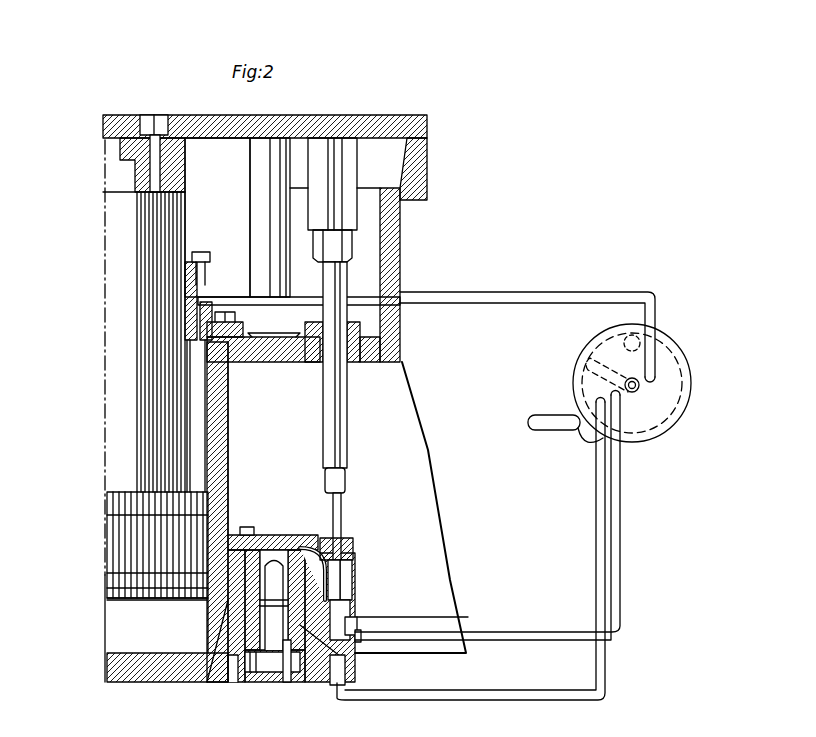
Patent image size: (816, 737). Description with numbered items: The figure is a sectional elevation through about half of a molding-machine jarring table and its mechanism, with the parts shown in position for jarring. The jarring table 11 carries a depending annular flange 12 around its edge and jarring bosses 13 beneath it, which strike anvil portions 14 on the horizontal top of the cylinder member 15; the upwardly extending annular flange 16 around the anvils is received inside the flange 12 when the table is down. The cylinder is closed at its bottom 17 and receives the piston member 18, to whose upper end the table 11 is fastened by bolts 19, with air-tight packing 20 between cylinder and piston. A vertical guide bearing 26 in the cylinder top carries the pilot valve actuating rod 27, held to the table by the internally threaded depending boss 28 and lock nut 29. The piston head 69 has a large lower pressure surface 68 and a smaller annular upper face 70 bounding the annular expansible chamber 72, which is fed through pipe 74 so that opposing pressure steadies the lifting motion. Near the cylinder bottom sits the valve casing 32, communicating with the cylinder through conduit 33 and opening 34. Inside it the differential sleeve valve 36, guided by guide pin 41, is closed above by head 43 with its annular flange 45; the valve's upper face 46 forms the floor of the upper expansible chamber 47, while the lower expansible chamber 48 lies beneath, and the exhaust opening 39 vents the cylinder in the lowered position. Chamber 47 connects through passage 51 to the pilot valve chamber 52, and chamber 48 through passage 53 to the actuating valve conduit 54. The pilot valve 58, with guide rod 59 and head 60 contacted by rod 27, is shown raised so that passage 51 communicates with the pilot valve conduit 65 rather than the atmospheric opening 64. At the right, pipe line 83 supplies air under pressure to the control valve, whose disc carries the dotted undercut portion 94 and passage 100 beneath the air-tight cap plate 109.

The jarring table 11 is at (388, 114).
The depending annular flange 12 is at (427, 134).
The jarring bosses 13 is at (250, 222).
The anvil portions 14 is at (280, 336).
The cylinder member 15 is at (228, 432).
The upwardly extending annular flange 16 is at (400, 275).
The cylinder bottom 17 is at (166, 683).
The piston member 18 is at (110, 432).
The bolts 19 is at (152, 172).
The air-tight packing 20 is at (185, 290).
The vertical guide bearing 26 is at (400, 333).
The pilot valve actuating rod 27 is at (347, 430).
The internally screw-threaded depending boss 28 is at (345, 168).
The lock nut 29 is at (335, 248).
The valve casing 32 is at (300, 684).
The conduit 33 is at (210, 618).
The opening 34 is at (218, 660).
The differential sleeve valve 36 is at (283, 535).
The exhaust opening 39 is at (285, 682).
The guide pin 41 is at (262, 660).
The head 43 is at (262, 550).
The downwardly extending annular flange 45 is at (284, 560).
The upper annular fluid pressure receiving face 46 is at (245, 527).
The upper annular expansible chamber 47 is at (315, 538).
The lower expansible chamber 48 is at (357, 628).
The passage 51 is at (340, 590).
The pilot valve chamber 52 is at (350, 612).
The passage 53 is at (358, 645).
The actuating valve conduit 54 is at (596, 486).
The pilot valve 58 is at (352, 578).
The guide rod 59 is at (341, 530).
The head 60 is at (345, 480).
The opening 64 is at (353, 556).
The pilot valve conduit 65 is at (620, 514).
The fluid pressure receiving surface 68 is at (107, 632).
The piston head 69 is at (107, 538).
The annular piston face 70 is at (200, 482).
The annular expansible chamber 72 is at (190, 380).
The pipe 74 is at (515, 292).
The pipe line 83 is at (535, 415).
The undercut portion 94 is at (620, 350).
The passage 100 is at (650, 340).
The air-tight cap plate 109 is at (690, 412).